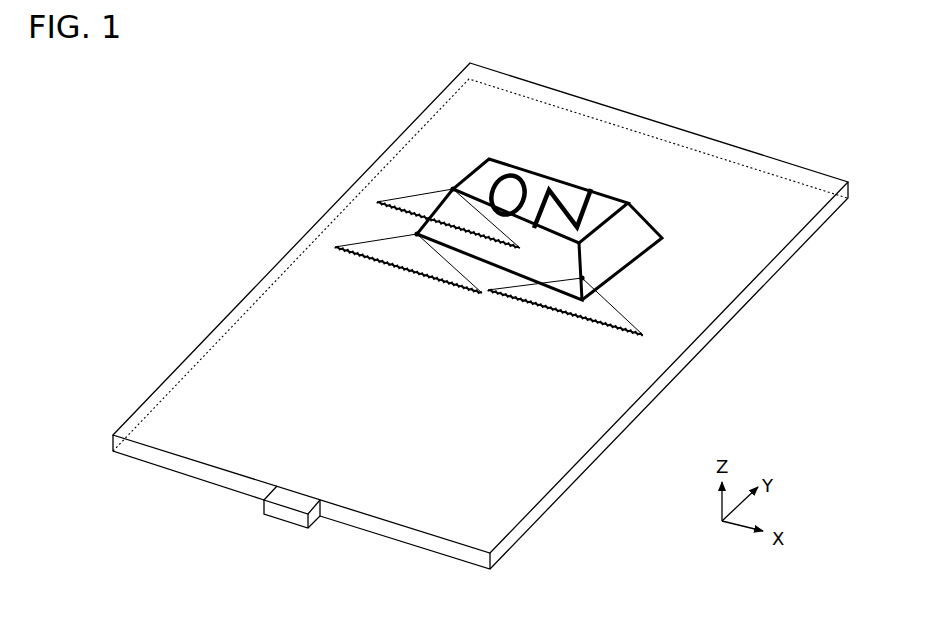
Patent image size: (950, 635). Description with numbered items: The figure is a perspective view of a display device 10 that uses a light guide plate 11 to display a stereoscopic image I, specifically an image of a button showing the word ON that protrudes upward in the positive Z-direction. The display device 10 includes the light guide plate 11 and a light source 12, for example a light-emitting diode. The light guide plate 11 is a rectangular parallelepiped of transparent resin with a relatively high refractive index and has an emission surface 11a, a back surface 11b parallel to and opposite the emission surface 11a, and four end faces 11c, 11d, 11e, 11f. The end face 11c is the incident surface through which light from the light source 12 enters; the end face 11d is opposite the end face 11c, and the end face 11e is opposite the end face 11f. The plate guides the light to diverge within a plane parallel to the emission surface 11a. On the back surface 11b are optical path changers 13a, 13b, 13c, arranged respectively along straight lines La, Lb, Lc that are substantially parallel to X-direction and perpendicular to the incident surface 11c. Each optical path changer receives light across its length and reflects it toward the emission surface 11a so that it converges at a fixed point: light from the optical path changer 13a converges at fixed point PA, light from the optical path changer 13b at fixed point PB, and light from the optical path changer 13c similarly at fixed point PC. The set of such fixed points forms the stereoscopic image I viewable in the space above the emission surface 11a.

The display device 10 is at (486, 307).
The light guide plate 11 is at (797, 168).
The emission surface 11a is at (792, 232).
The back surface 11b is at (730, 322).
The end face (incident surface) 11c is at (217, 477).
The end face 11d is at (547, 93).
The end face 11e is at (142, 408).
The end face 11f is at (570, 482).
The light source 12 is at (298, 524).
The optical path changer 13a is at (403, 221).
The optical path changer 13b is at (438, 295).
The optical path changer 13c is at (559, 315).
The line La is at (377, 202).
The line Lb is at (335, 247).
The line Lc is at (643, 335).
The stereoscopic image I is at (583, 181).
The fixed point PA is at (453, 189).
The fixed point PB is at (417, 234).
The fixed point PC is at (582, 278).